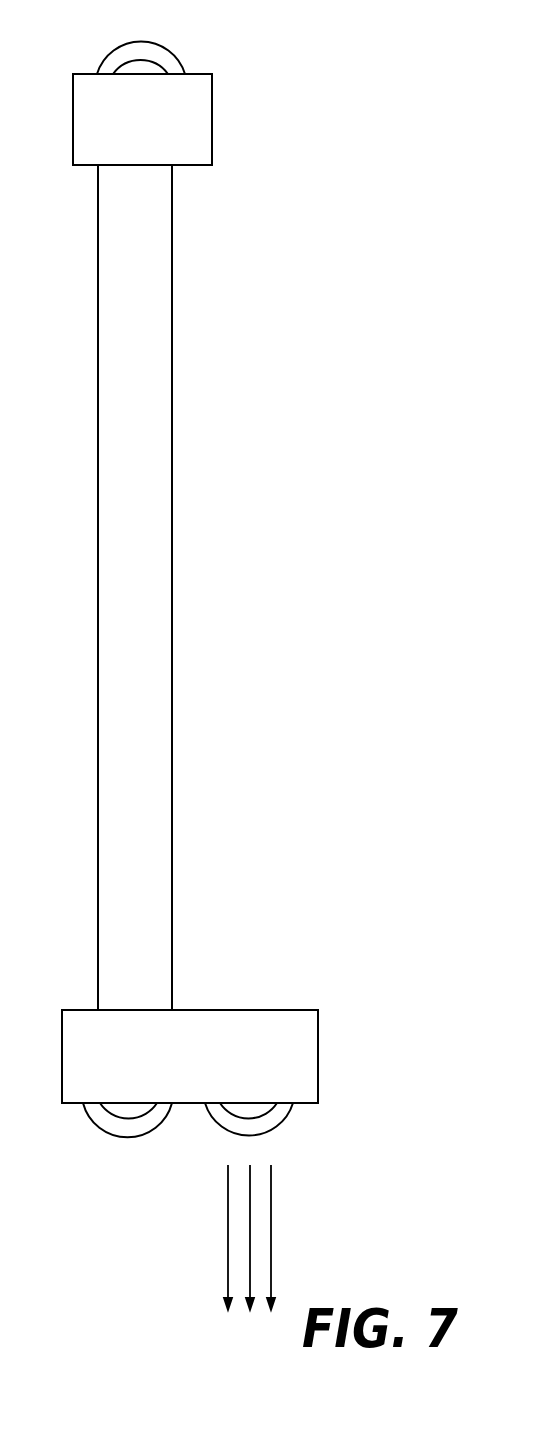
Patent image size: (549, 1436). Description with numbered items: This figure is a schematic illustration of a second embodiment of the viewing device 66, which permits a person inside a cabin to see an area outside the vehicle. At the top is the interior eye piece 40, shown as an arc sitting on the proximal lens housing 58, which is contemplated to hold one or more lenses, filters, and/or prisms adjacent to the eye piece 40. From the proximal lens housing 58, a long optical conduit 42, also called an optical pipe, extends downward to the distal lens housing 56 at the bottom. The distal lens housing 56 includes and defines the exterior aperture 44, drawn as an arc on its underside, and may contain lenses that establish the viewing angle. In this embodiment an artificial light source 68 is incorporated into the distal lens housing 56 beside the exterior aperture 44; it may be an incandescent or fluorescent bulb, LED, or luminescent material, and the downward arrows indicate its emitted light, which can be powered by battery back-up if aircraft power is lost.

The interior eye piece 40 is at (170, 50).
The proximal lens housing 58 is at (212, 127).
The optical conduit 42 is at (172, 704).
The viewing device 66 is at (360, 400).
The distal lens housing 56 is at (231, 1010).
The exterior aperture 44 is at (108, 1131).
The artificial light source 68 is at (283, 1131).